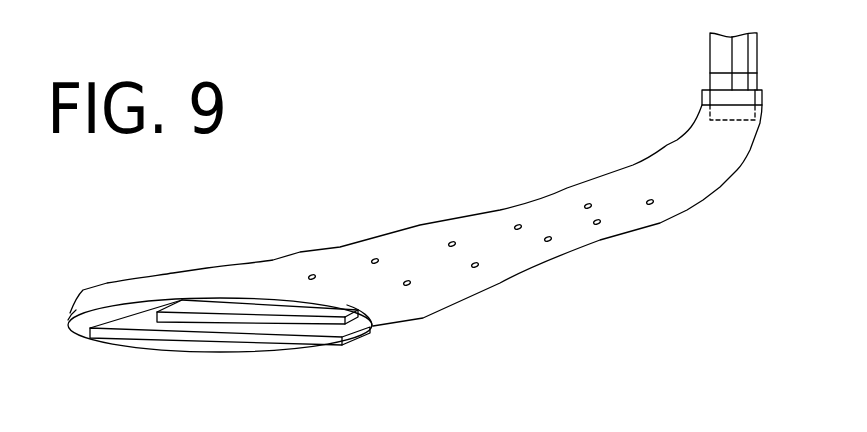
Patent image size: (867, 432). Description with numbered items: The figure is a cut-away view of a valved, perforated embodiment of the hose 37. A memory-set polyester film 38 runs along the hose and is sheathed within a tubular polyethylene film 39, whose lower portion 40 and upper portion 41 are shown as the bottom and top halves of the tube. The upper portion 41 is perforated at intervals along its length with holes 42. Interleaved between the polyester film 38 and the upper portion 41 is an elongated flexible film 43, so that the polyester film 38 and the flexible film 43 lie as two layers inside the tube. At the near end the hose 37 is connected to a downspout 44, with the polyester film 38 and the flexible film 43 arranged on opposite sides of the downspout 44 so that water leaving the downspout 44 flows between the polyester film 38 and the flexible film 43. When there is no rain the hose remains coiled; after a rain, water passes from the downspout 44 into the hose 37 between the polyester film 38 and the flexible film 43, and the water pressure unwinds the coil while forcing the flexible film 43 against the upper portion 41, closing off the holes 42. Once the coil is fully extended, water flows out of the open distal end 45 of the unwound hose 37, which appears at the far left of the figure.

The perforated hose 37 is at (705, 195).
The memory-set polyester film 38 is at (273, 338).
The tubular polyethylene film 39 is at (350, 350).
The lower portion 40 is at (145, 350).
The upper portion 41 is at (337, 253).
The holes 42 is at (523, 226).
The elongated flexible film 43 is at (250, 308).
The downspout 44 is at (750, 53).
The open distal end 45 is at (80, 320).